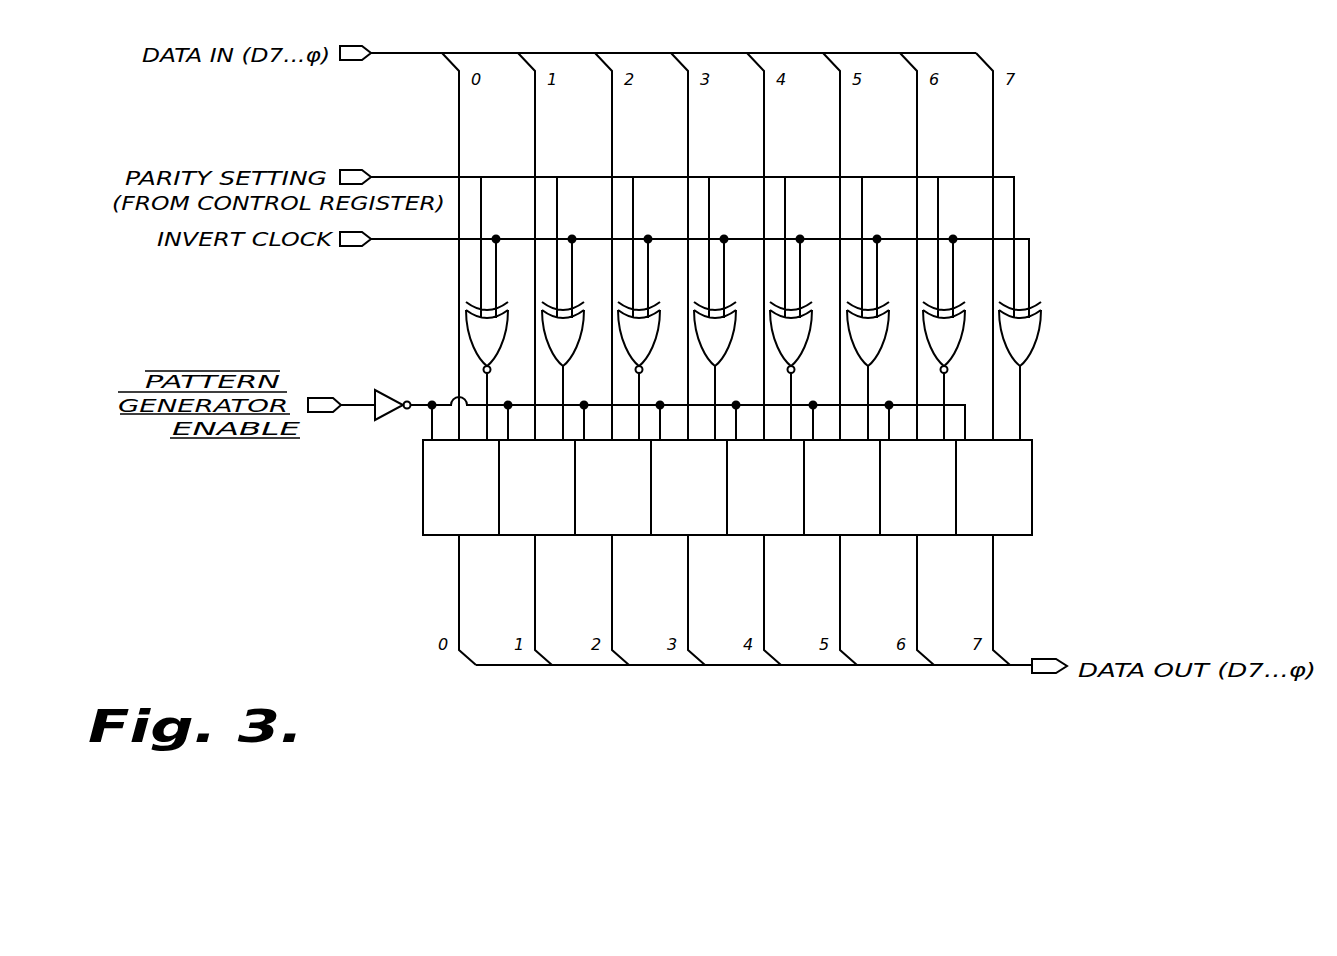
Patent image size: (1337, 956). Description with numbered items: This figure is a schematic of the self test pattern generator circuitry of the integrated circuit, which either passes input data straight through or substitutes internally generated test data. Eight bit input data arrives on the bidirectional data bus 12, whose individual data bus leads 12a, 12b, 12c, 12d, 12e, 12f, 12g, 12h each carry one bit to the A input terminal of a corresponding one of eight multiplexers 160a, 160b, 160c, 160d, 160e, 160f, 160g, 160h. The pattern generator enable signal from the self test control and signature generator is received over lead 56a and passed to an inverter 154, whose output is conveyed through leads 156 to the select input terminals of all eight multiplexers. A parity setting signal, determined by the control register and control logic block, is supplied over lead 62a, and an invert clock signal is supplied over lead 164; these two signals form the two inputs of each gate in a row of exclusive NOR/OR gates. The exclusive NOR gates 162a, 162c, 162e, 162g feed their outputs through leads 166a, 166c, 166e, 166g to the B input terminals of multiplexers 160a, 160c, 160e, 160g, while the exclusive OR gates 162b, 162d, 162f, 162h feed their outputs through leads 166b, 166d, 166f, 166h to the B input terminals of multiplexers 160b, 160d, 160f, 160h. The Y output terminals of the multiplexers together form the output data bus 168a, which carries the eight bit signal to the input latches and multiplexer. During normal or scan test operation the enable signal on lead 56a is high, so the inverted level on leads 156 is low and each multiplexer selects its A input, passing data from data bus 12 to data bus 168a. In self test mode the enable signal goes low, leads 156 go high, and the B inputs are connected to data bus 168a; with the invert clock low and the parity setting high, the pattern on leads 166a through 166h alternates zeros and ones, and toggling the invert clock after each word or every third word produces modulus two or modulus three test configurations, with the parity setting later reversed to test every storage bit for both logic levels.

The data bus 12 is at (398, 52).
The data bus lead 12a is at (459, 105).
The data bus lead 12b is at (535, 122).
The data bus lead 12c is at (612, 116).
The data bus lead 12d is at (688, 137).
The data bus lead 12e is at (764, 135).
The data bus lead 12f is at (840, 133).
The data bus lead 12g is at (917, 134).
The data bus lead 12h is at (993, 133).
The lead 62a is at (413, 177).
The lead 164 is at (410, 241).
The exclusive NOR gate 162a is at (467, 306).
The exclusive OR gate 162b is at (543, 306).
The exclusive NOR gate 162c is at (619, 306).
The exclusive OR gate 162d is at (695, 306).
The exclusive NOR gate 162e is at (771, 306).
The exclusive OR gate 162f is at (848, 306).
The exclusive NOR gate 162g is at (924, 306).
The exclusive OR gate 162h is at (1043, 328).
The lead 166a is at (490, 379).
The lead 166b is at (566, 379).
The lead 166c is at (642, 379).
The lead 166d is at (718, 379).
The lead 166e is at (794, 379).
The lead 166f is at (871, 379).
The lead 166g is at (947, 379).
The lead 166h is at (1023, 398).
The lead 56a is at (358, 404).
The inverter 154 is at (397, 386).
The leads 156 is at (687, 409).
The multiplexer 160a is at (423, 521).
The multiplexer 160b is at (513, 548).
The multiplexer 160c is at (590, 548).
The multiplexer 160d is at (666, 548).
The multiplexer 160e is at (742, 548).
The multiplexer 160f is at (818, 548).
The multiplexer 160g is at (895, 548).
The multiplexer 160h is at (971, 548).
The data bus 168a is at (1020, 667).